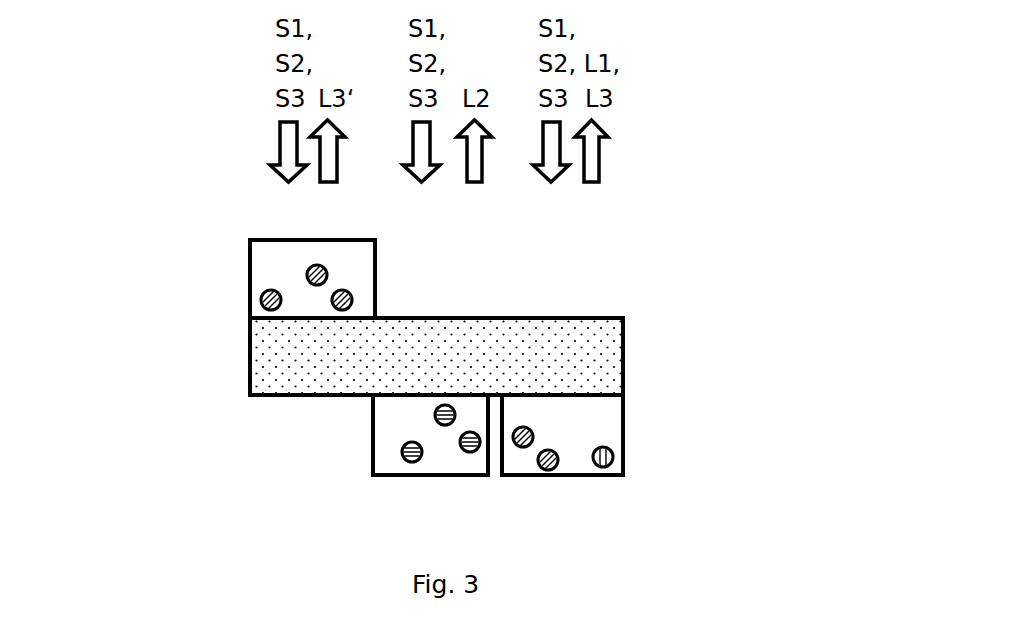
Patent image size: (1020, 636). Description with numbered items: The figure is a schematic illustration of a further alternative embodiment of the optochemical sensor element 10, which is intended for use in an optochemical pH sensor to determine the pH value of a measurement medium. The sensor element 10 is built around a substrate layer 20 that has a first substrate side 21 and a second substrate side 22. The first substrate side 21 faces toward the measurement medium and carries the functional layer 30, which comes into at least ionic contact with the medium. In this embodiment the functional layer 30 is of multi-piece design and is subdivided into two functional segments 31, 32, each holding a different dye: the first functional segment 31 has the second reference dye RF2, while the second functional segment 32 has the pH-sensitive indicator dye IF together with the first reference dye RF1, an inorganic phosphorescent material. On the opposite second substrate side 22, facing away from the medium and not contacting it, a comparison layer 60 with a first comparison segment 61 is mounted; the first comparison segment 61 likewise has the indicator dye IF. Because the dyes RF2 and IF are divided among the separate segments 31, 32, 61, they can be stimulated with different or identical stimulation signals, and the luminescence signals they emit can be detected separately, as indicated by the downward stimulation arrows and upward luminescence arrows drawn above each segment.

The optochemical sensor element 10 is at (90, 255).
The substrate layer 20 is at (166, 375).
The first substrate side 21 is at (593, 402).
The second substrate side 22 is at (590, 311).
The functional layer 30 is at (366, 366).
The first functional segment 31 is at (419, 418).
The second functional segment 32 is at (541, 418).
The comparison layer 60 is at (259, 223).
The first comparison segment 61 is at (245, 262).
The indicator dye IF is at (272, 310).
The first reference dye RF1 is at (603, 467).
The second reference dye RF2 is at (412, 462).